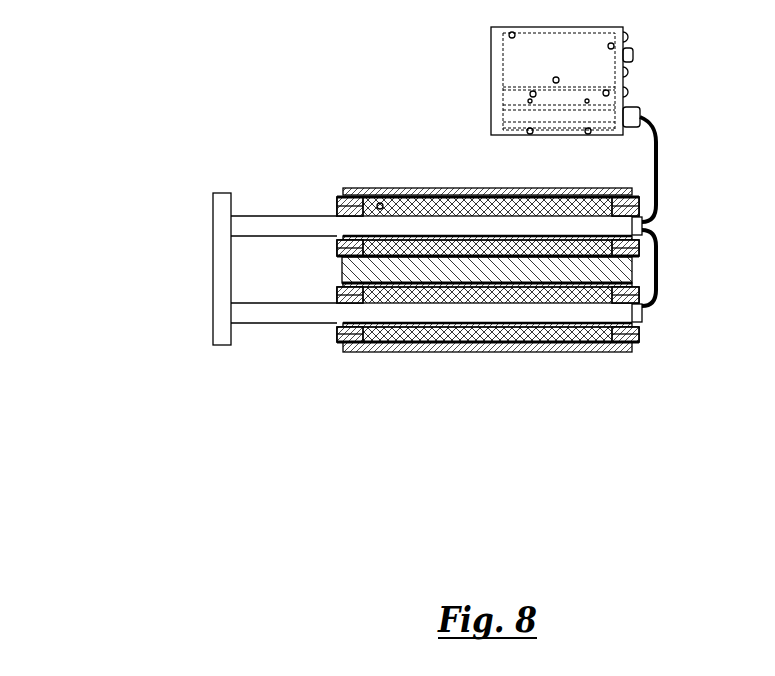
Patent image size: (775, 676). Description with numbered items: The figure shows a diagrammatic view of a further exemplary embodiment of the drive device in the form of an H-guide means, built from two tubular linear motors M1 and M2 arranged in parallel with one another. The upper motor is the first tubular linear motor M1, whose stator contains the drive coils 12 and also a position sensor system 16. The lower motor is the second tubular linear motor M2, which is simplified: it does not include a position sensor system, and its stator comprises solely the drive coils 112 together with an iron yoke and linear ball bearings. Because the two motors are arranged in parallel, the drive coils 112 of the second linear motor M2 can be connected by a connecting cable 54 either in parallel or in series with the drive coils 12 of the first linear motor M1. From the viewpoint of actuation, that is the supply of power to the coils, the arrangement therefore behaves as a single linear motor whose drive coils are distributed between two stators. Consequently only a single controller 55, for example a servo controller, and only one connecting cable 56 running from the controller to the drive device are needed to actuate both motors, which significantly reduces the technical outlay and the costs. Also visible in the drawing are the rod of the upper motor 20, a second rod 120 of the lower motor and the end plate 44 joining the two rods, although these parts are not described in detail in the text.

The drive coils 12 is at (475, 190).
The position sensor system 16 is at (378, 192).
The upper piston rod 20 is at (282, 226).
The end plate 44 is at (222, 258).
The connecting cable 54 is at (660, 277).
The controller 55 is at (600, 80).
The connecting cable 56 is at (660, 168).
The drive coils 112 is at (590, 352).
The lower piston rod 120 is at (275, 316).
The first tubular linear motor M1 is at (437, 185).
The second tubular linear motor M2 is at (398, 354).